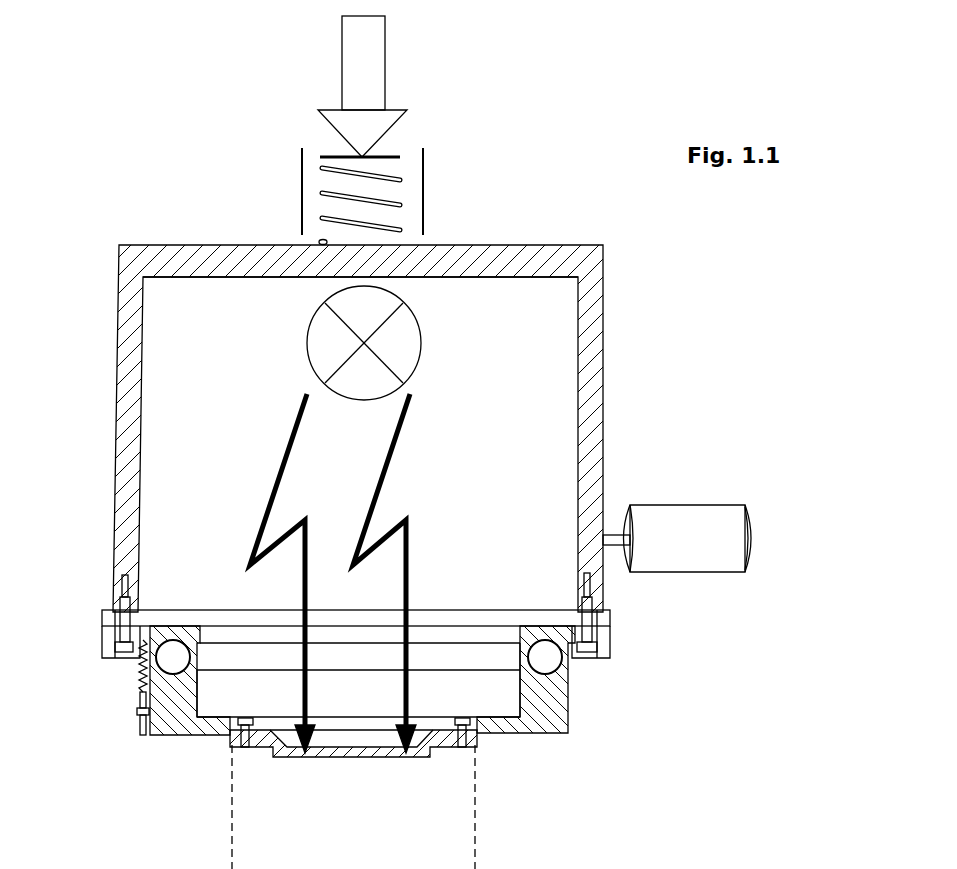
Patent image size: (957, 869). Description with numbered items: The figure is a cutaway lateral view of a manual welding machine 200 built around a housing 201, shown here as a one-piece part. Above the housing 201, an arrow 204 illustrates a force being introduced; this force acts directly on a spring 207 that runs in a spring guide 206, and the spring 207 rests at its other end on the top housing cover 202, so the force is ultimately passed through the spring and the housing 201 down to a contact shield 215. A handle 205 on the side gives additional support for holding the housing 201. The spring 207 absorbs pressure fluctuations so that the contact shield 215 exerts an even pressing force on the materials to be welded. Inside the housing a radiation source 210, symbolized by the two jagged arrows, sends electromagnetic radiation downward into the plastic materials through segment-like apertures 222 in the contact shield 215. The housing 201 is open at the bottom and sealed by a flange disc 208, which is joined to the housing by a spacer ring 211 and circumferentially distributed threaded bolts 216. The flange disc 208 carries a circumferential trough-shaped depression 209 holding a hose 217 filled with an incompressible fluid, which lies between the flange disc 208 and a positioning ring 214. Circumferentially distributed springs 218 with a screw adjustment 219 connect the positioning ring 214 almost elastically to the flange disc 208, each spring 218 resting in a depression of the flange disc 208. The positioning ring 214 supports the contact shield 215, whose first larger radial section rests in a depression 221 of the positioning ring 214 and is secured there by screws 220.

The manual welding machine 200 is at (672, 89).
The housing 201 is at (595, 432).
The top housing cover 202 is at (530, 252).
The arrow 204 is at (360, 68).
The handle 205 is at (698, 522).
The spring guide 206 is at (302, 178).
The spring 207 is at (400, 203).
The flange disc 208 is at (567, 647).
The trough-shaped depression 209 is at (538, 652).
The radiation source 210 is at (408, 352).
The spacer ring 211 is at (575, 620).
The positioning ring 214 is at (172, 723).
The contact shield 215 is at (357, 749).
The threaded bolts 216 is at (580, 648).
The hose 217 is at (543, 662).
The springs 218 is at (143, 663).
The screw adjustment 219 is at (140, 705).
The screws 220 is at (478, 742).
The depression 221 is at (236, 748).
The segment-like apertures 222 is at (401, 756).